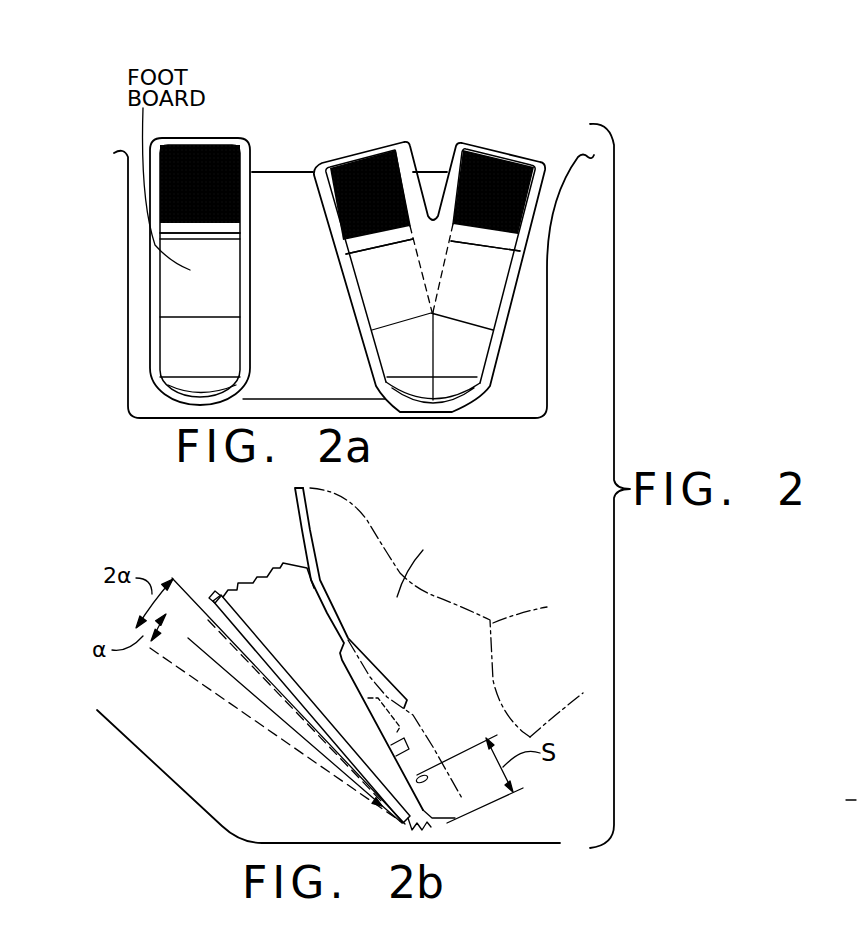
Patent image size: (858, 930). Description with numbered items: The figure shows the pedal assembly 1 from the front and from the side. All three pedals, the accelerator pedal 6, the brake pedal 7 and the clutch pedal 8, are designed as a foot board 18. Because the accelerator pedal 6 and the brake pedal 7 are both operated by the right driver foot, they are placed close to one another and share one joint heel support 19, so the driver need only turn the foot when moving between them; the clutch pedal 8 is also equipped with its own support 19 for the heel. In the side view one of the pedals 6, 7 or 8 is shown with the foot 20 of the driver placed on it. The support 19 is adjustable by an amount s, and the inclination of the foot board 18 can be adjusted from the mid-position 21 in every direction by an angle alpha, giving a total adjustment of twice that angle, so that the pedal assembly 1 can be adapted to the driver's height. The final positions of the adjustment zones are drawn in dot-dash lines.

In FIG. 2A, the pedal assembly 1 is at (560, 362).
In FIG. 2A, the accelerator pedal 6 is at (508, 158).
In FIG. 2A, the brake pedal 7 is at (357, 160).
In FIG. 2A, the clutch pedal 8 is at (224, 144).
In FIG. 2A, the foot board 18 is at (368, 266).
In FIG. 2A, the heel support 19 is at (388, 397).
In FIG. 2B, the foot of the driver 20 is at (441, 610).
In FIG. 2B, the mid-position 21 is at (217, 672).